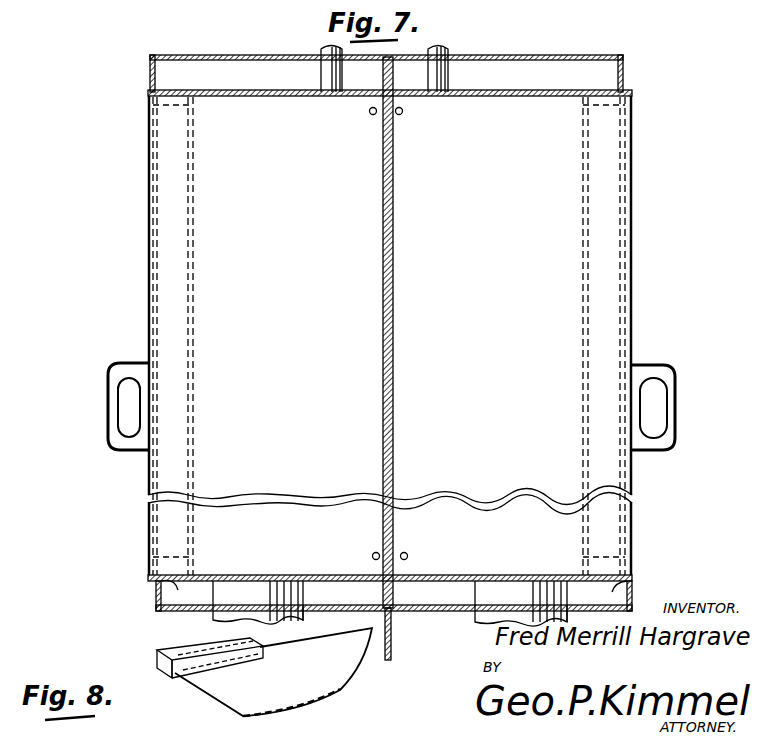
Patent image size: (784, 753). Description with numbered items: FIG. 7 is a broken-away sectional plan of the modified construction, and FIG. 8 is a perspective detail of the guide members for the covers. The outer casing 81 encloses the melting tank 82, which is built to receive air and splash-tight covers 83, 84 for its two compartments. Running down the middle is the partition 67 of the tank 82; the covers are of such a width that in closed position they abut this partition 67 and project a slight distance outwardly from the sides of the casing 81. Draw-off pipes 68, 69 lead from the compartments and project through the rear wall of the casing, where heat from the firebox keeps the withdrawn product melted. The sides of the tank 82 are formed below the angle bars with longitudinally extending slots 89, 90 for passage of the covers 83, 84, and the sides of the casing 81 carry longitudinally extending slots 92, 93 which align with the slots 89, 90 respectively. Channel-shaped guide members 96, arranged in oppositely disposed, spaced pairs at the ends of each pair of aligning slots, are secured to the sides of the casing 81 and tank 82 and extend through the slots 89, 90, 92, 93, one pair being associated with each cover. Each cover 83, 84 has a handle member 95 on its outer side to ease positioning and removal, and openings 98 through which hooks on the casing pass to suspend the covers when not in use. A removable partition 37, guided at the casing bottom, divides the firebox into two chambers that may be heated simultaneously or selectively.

In FIG. 7, the removable partition 37 is at (384, 590).
In FIG. 7, the partition of tank 67 is at (383, 373).
In FIG. 7, the draw-off pipe 68 is at (321, 76).
In FIG. 7, the draw-off pipe 69 is at (442, 76).
In FIG. 7, the outer casing 81 is at (636, 72).
In FIG. 7, the melting tank 82 is at (506, 85).
In FIG. 7, the cover 83 is at (258, 422).
In FIG. 8, the cover 83 is at (315, 668).
In FIG. 7, the cover 84 is at (521, 427).
In FIG. 7, the slot 89 is at (190, 166).
In FIG. 7, the slot 90 is at (590, 157).
In FIG. 7, the slot 92 is at (150, 138).
In FIG. 7, the slot 93 is at (625, 178).
In FIG. 7, the handle member 95 is at (118, 398).
In FIG. 7, the channel-shaped guide member 96 is at (170, 97).
In FIG. 8, the channel-shaped guide member 96 is at (170, 650).
In FIG. 7, the opening 98 is at (396, 115).